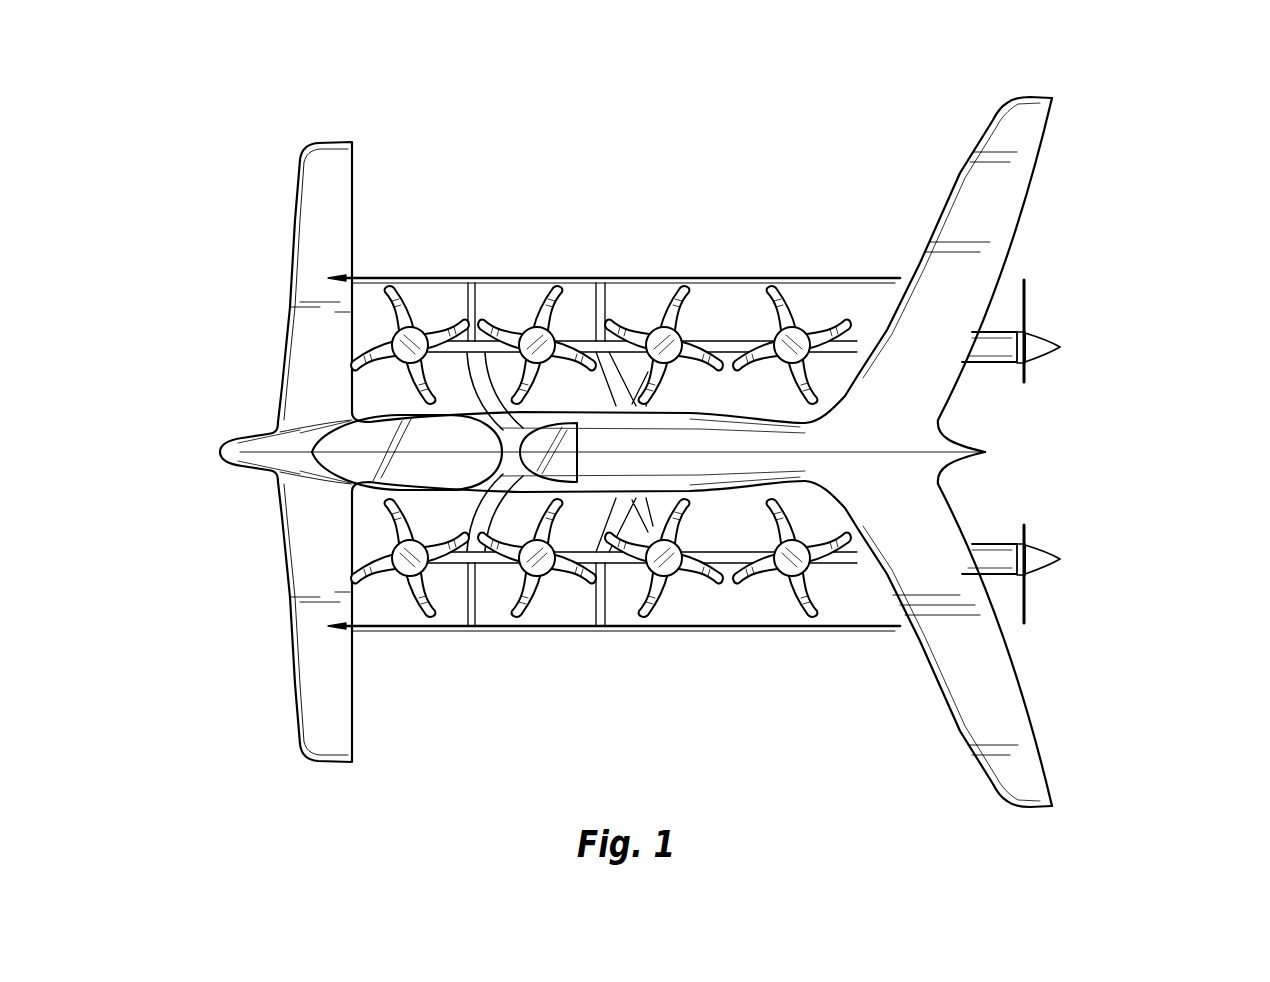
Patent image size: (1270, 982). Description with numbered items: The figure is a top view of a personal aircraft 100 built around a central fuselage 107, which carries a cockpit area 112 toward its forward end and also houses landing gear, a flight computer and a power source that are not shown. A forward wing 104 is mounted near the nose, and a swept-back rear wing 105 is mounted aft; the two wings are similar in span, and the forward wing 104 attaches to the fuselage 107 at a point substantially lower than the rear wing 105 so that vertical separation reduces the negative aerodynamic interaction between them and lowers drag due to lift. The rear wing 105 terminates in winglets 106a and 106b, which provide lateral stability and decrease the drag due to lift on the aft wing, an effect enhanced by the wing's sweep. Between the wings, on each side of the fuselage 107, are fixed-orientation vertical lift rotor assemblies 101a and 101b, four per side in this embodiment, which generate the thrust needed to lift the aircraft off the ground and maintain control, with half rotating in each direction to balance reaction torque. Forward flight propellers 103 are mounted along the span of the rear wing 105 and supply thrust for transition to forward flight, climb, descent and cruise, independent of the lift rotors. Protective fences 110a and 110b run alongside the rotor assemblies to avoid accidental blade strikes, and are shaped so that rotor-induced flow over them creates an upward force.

The personal aircraft 100 is at (265, 125).
The vertical lift rotor assembly 101a is at (795, 272).
The vertical lift rotor assembly 101b is at (802, 630).
The forward flight propeller 103 is at (1050, 552).
The forward wing 104 is at (300, 357).
The rear wing 105 is at (950, 228).
The winglet 106a is at (1010, 130).
The winglet 106b is at (1017, 776).
The fuselage 107 is at (698, 466).
The fence 110a is at (848, 275).
The fence 110b is at (838, 613).
The cockpit area 112 is at (402, 471).